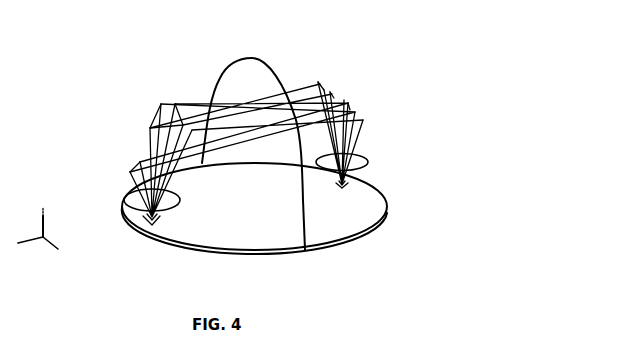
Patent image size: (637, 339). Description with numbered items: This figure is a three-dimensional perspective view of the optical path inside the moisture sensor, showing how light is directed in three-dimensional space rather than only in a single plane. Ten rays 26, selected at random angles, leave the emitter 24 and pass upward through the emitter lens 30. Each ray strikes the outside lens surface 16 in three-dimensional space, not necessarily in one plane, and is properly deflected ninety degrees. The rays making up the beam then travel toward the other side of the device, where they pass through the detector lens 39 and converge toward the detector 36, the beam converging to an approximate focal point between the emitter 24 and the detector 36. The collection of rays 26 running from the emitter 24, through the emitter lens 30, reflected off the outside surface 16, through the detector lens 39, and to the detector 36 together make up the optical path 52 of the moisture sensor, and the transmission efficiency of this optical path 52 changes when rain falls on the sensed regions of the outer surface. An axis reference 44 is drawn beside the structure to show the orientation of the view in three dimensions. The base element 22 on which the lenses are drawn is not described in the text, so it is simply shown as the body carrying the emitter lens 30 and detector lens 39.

The outside lens surface 16 is at (250, 57).
The base plate 22 is at (368, 241).
The emitter 24 is at (157, 225).
The rays 26 is at (171, 96).
The emitter lens 30 is at (140, 197).
The detector 36 is at (347, 186).
The detector lens 39 is at (368, 160).
The axis reference 44 is at (48, 223).
The optical path 52 is at (406, 113).